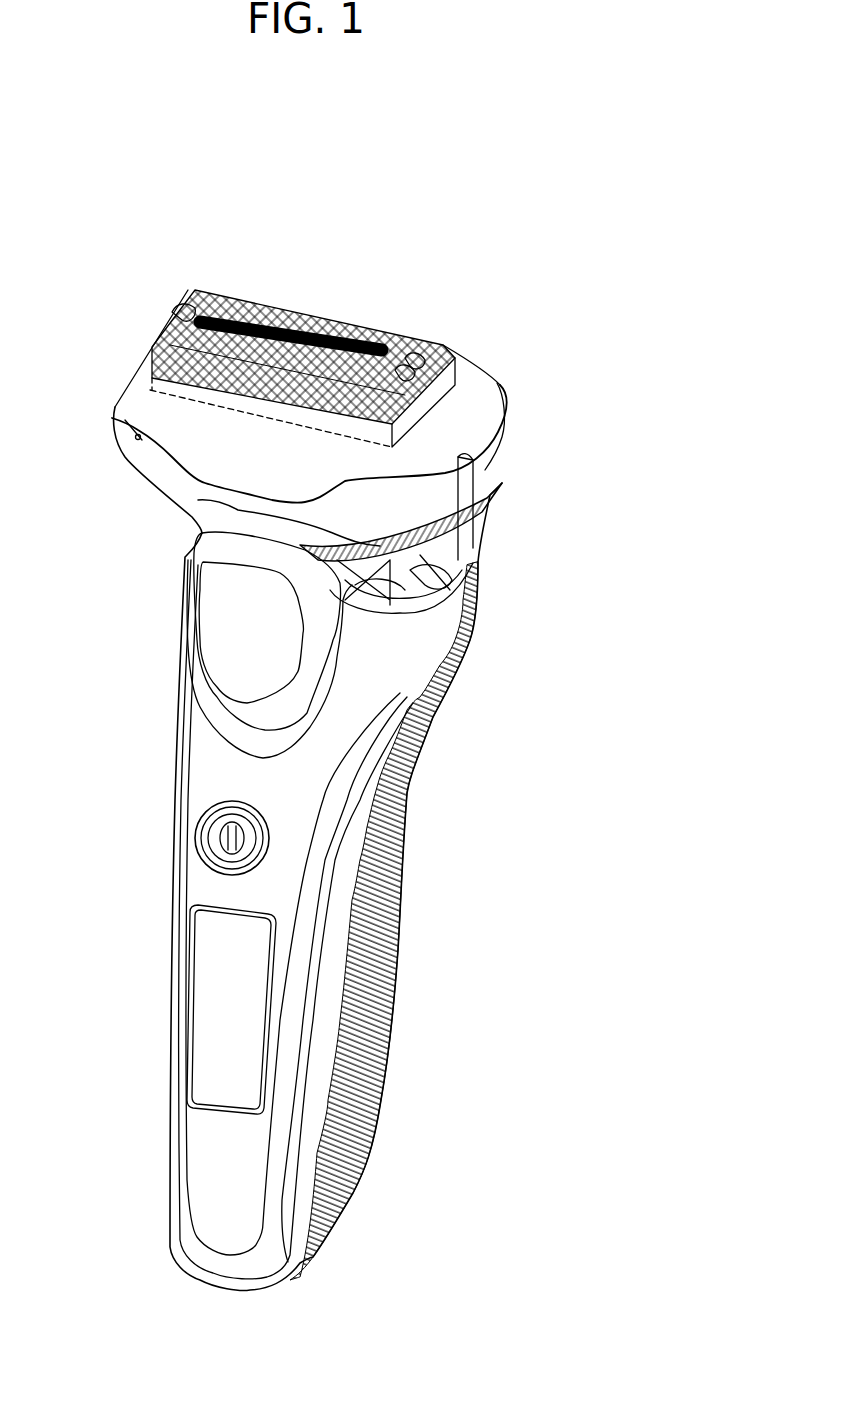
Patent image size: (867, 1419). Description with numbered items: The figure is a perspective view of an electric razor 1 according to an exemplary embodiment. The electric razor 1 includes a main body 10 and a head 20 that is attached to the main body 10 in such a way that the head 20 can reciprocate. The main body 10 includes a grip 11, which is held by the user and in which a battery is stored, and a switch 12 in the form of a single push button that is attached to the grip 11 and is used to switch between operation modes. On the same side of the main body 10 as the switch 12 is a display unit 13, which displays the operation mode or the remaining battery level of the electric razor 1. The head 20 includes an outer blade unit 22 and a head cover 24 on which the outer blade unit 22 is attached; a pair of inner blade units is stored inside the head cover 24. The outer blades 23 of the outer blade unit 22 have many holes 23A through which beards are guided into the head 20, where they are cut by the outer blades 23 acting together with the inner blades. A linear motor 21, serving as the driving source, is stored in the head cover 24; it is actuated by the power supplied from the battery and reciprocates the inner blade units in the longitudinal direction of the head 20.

The electric razor 1 is at (488, 242).
The main body 10 is at (463, 770).
The grip 11 is at (387, 960).
The switch 12 is at (205, 843).
The display unit 13 is at (188, 1016).
The head 20 is at (122, 354).
The linear motor 21 is at (150, 387).
The outer blade unit 22 is at (256, 289).
The outer blades 23 is at (306, 318).
The holes 23A is at (349, 320).
The head cover 24 is at (497, 383).